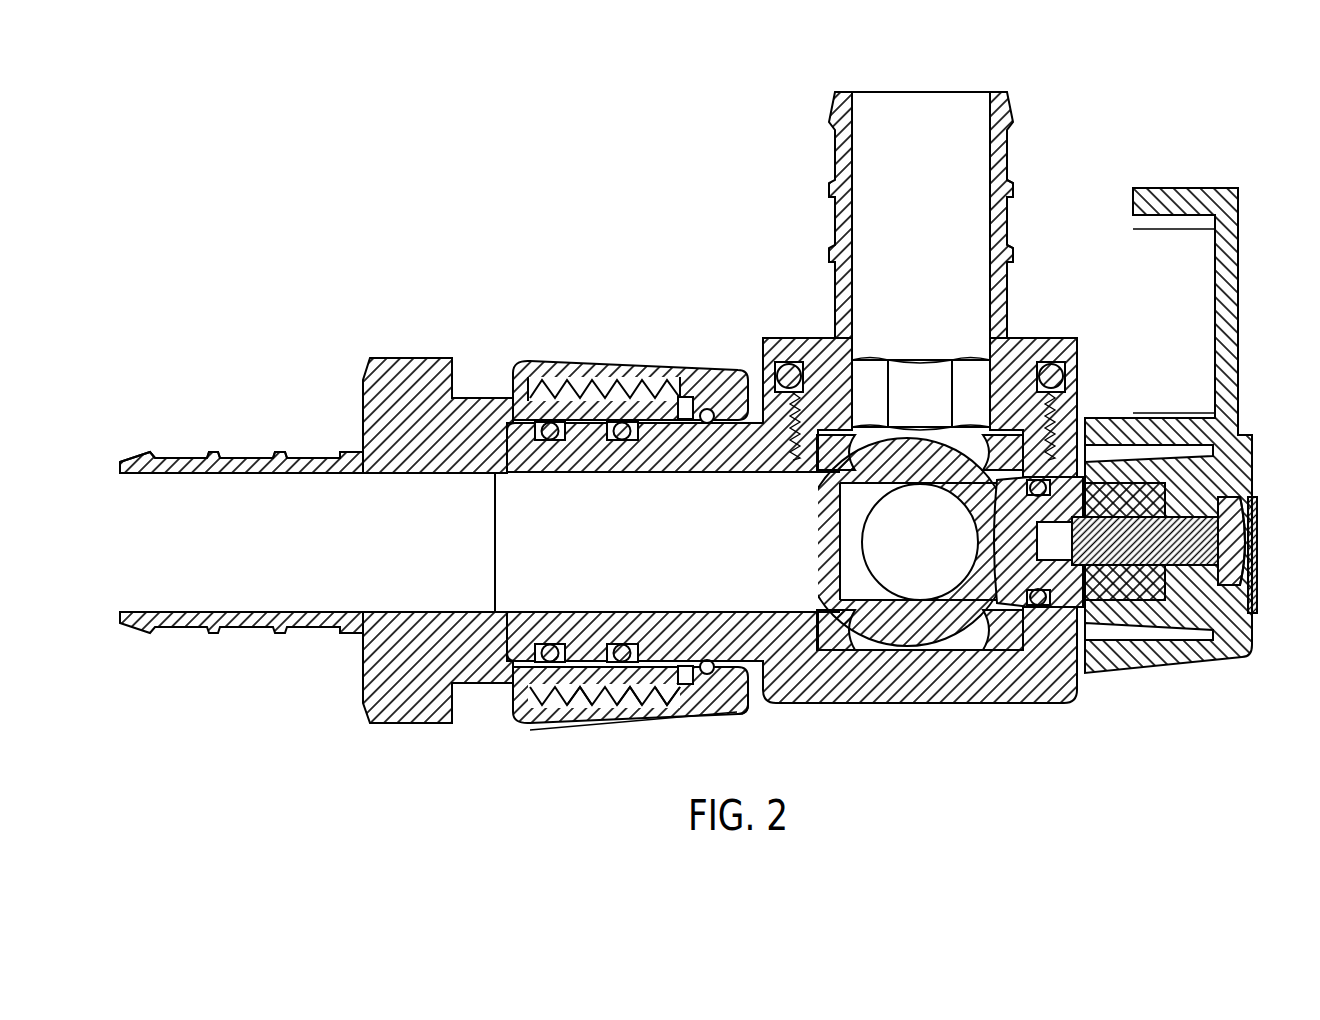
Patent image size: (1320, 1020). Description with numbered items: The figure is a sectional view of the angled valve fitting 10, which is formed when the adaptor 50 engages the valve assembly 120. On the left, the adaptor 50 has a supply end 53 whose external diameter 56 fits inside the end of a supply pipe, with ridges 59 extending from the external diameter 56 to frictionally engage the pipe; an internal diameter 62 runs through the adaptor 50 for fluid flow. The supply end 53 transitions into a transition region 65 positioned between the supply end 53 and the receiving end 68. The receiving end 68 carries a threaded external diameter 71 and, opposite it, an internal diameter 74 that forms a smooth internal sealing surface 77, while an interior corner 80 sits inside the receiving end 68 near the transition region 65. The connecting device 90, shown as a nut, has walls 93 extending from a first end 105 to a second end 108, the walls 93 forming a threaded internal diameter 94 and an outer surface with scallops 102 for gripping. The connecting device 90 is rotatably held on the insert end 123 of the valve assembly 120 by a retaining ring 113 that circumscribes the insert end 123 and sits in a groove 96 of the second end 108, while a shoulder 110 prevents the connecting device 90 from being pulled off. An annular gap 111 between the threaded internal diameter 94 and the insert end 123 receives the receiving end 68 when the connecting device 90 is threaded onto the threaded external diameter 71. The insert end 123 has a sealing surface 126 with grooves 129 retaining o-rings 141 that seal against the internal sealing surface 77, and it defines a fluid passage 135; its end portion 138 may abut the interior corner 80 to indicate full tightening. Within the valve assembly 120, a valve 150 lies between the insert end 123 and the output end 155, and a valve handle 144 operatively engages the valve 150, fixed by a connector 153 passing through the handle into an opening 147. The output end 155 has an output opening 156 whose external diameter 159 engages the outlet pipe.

The angled valve fitting 10 is at (471, 193).
The adaptor 50 is at (380, 378).
The supply end 53 is at (133, 463).
The external diameter 56 is at (170, 456).
The ridges 59 is at (212, 456).
The internal diameter 62 is at (150, 608).
The transition region 65 is at (380, 668).
The receiving end 68 is at (640, 670).
The threaded external diameter 71 is at (557, 664).
The internal diameter 74 is at (663, 659).
The internal sealing surface 77 is at (583, 657).
The interior corner 80 is at (530, 433).
The connecting device 90 is at (621, 432).
The walls 93 is at (560, 400).
The threaded internal diameter 94 is at (600, 430).
The groove 96 is at (713, 670).
The scallops 102 is at (1010, 182).
The first end 105 is at (510, 723).
The second end 108 is at (735, 712).
The shoulder 110 is at (715, 665).
The annular gap 111 is at (688, 405).
The retaining ring 113 is at (708, 675).
The valve assembly 120 is at (825, 337).
The insert end 123 is at (707, 409).
The sealing surface 126 is at (577, 420).
The grooves 129 is at (543, 437).
The fluid passage 135 is at (710, 487).
The end portion 138 is at (505, 433).
The o-rings 141 is at (655, 405).
The valve handle 144 is at (1239, 270).
The opening 147 is at (1248, 527).
The valve 150 is at (970, 618).
The connector 153 is at (1257, 598).
The output end 155 is at (1015, 342).
The output opening 156 is at (997, 97).
The external diameter 159 is at (1005, 150).